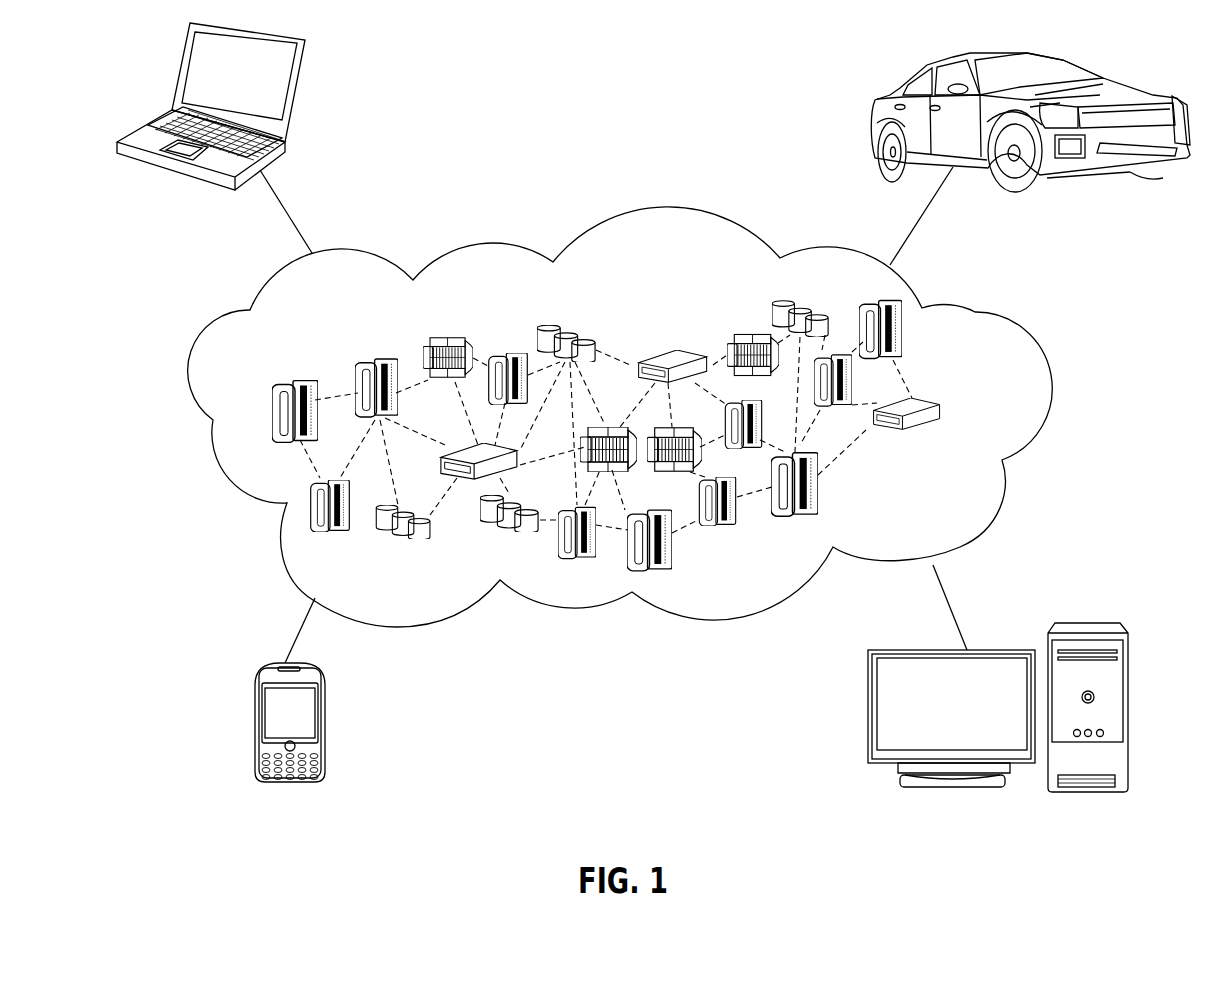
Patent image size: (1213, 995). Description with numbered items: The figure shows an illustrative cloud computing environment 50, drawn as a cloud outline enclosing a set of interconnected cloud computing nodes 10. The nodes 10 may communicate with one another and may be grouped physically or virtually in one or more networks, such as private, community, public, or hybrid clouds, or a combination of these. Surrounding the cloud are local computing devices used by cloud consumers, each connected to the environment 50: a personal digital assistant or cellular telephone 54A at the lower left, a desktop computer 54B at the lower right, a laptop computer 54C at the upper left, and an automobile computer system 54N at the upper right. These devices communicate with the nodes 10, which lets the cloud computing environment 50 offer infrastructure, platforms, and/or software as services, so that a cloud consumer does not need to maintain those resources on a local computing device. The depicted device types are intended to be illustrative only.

The cloud computing nodes 10 is at (985, 411).
The cloud computing environment 50 is at (1010, 323).
The personal digital assistant (PDA) or cellular telephone 54A is at (253, 728).
The desktop computer 54B is at (1090, 622).
The laptop computer 54C is at (297, 92).
The automobile computer system 54N is at (878, 99).